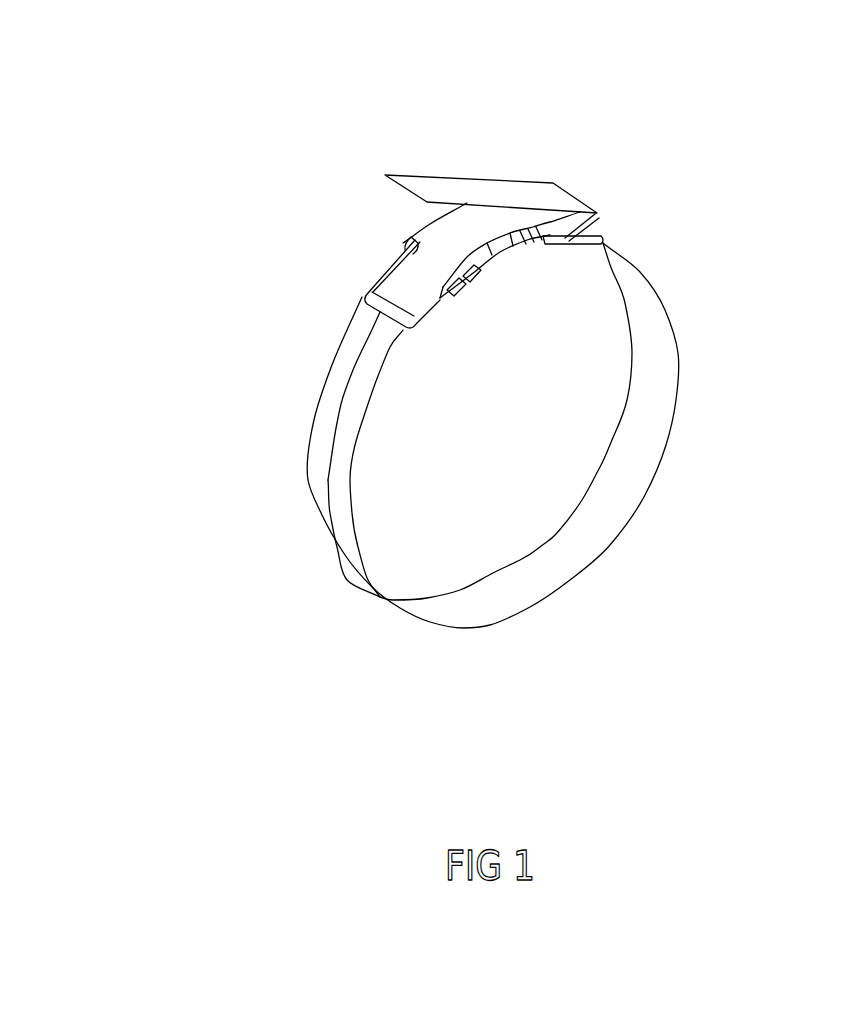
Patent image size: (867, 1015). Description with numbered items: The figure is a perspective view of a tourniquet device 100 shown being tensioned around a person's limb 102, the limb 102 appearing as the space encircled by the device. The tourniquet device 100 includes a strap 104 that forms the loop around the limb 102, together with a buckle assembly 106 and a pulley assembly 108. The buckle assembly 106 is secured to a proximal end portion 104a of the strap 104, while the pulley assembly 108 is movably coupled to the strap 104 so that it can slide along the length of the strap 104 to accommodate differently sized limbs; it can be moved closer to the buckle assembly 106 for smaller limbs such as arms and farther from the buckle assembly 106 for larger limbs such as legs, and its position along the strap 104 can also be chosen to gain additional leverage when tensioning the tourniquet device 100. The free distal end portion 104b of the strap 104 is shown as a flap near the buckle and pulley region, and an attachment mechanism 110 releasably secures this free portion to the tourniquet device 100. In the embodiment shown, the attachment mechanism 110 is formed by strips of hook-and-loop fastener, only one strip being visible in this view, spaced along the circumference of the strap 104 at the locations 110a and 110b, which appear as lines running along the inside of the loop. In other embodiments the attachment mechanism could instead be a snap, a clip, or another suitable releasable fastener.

The tourniquet device 100 is at (398, 376).
The limb 102 is at (437, 492).
The strap 104 is at (389, 435).
The proximal end portion 104a is at (335, 219).
The distal end portion 104b is at (491, 123).
The buckle assembly 106 is at (296, 195).
The pulley assembly 108 is at (658, 203).
The attachment mechanism 110 is at (201, 512).
The attachment mechanism strip location 110a is at (201, 396).
The attachment mechanism strip location 110b is at (218, 552).